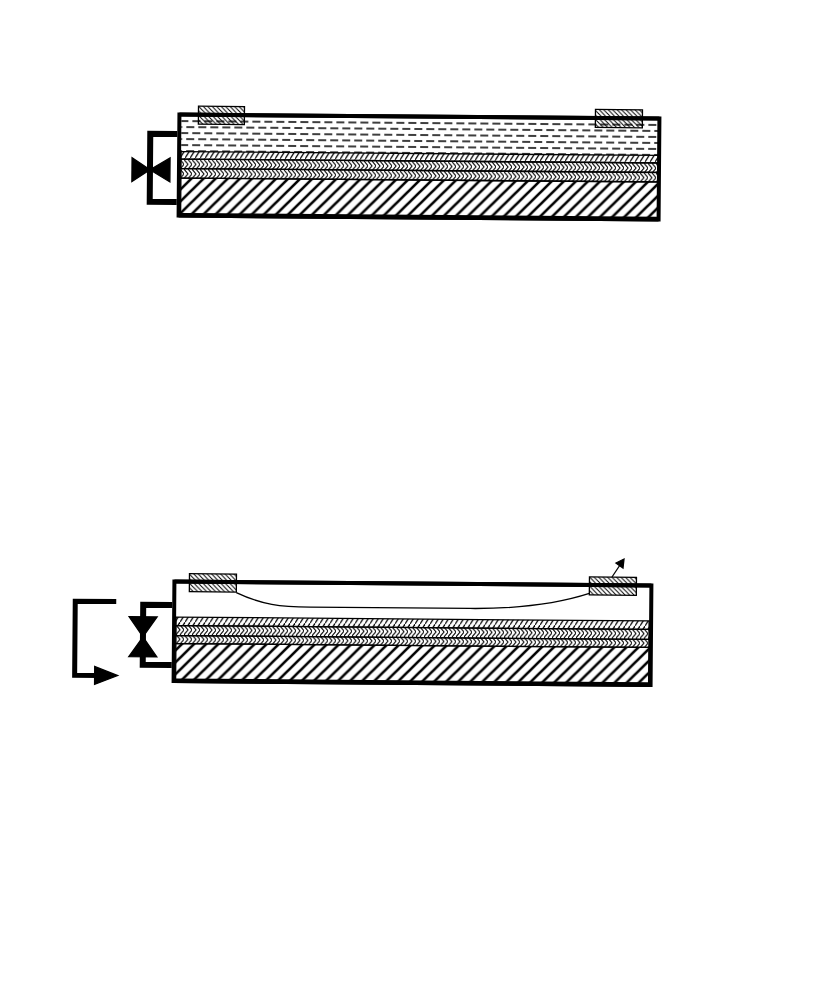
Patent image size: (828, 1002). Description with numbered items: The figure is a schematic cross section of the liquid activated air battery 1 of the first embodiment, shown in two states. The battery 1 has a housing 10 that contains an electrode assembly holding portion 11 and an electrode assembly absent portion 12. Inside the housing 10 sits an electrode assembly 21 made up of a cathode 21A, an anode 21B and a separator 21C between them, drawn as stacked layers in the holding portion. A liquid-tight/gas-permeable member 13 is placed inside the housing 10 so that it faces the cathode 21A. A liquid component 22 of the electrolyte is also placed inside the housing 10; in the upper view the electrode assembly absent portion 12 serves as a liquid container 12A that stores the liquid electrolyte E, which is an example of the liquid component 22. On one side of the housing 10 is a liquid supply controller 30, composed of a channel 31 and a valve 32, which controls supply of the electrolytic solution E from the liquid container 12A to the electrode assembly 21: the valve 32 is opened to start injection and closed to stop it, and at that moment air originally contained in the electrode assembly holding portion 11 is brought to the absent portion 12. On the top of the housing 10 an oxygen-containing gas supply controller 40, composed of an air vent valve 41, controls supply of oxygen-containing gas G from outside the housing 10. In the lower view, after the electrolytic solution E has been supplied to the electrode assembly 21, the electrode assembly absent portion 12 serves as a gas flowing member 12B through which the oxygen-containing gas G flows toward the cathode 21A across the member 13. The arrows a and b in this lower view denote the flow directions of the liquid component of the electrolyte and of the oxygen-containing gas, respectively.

The liquid activated air battery 1 is at (427, 100).
The housing 10 is at (662, 133).
The electrode assembly holding portion 11 is at (544, 219).
The electrode assembly absent portion 12 is at (479, 332).
The liquid container 12A is at (419, 117).
The gas flowing member 12B is at (412, 584).
The liquid-tight/gas-permeable member 13 is at (661, 153).
The electrode assembly 21 is at (492, 429).
The cathode 21A is at (661, 163).
The anode 21B is at (661, 200).
The separator 21C is at (661, 175).
The liquid component 22 is at (420, 104).
The liquid electrolyte E is at (487, 128).
The liquid supply controller 30 is at (97, 398).
The channel 31 is at (146, 134).
The valve 32 is at (132, 171).
The oxygen-containing gas supply controller 40 is at (440, 312).
The air vent valve 41 is at (211, 109).
The flow direction of liquid component a is at (72, 637).
The flow direction of oxygen-containing gas b is at (332, 607).
The oxygen-containing gas G is at (500, 587).